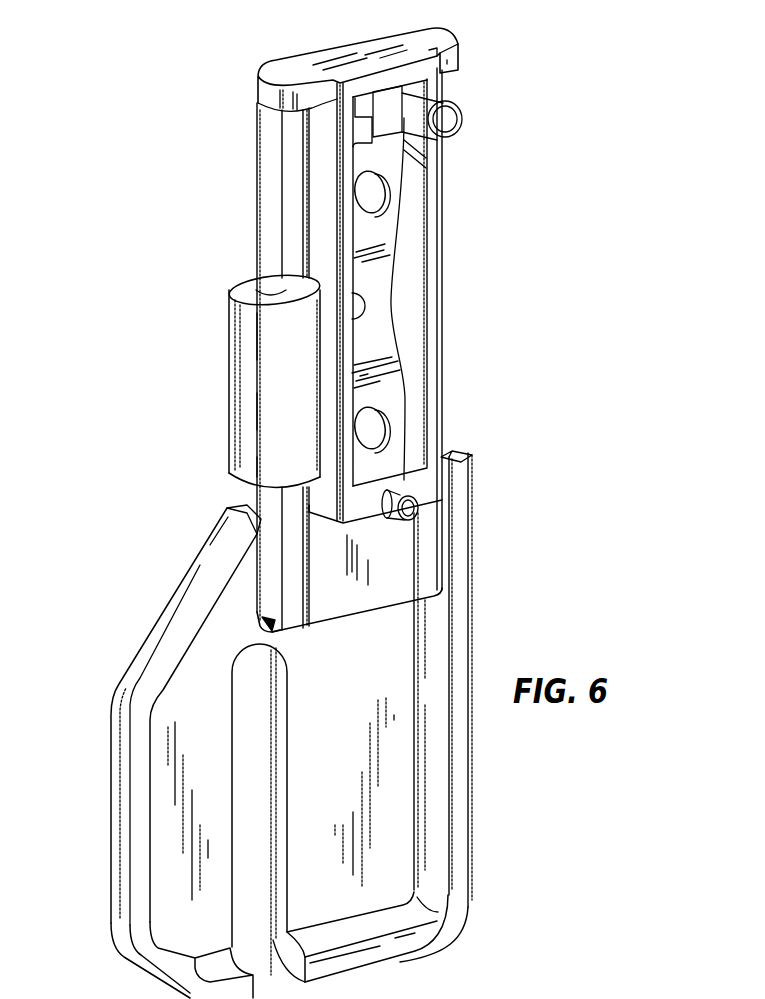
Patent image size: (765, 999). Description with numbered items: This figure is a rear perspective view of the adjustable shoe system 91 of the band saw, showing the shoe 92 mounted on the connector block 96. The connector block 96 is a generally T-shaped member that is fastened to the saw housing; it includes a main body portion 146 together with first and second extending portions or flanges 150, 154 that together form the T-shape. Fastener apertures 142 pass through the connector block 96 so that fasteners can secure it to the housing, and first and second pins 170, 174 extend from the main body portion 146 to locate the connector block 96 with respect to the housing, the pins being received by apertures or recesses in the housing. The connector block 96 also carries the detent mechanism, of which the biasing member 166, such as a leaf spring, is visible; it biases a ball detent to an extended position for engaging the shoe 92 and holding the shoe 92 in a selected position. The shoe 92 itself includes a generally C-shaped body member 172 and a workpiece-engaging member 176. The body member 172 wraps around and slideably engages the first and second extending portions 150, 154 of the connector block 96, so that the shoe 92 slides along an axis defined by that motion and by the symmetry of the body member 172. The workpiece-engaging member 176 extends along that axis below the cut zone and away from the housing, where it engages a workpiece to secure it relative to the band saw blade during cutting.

The adjustable shoe system 91 is at (543, 103).
The shoe 92 is at (472, 557).
The connector block 96 is at (388, 563).
The fastener apertures 142 is at (383, 200).
The main body portion 146 is at (373, 63).
The first extending portion 150 is at (273, 78).
The second extending portion 154 is at (440, 43).
The biasing member 166 is at (385, 338).
The first pin 170 is at (423, 490).
The body member 172 is at (240, 287).
The second pin 174 is at (427, 103).
The workpiece-engaging member 176 is at (213, 764).